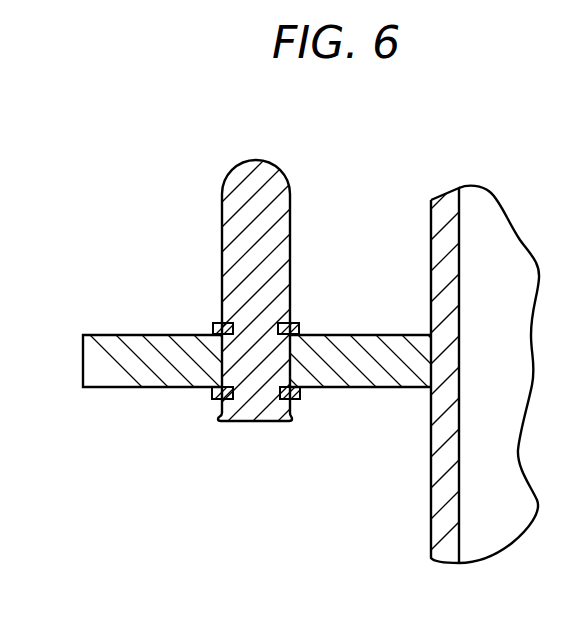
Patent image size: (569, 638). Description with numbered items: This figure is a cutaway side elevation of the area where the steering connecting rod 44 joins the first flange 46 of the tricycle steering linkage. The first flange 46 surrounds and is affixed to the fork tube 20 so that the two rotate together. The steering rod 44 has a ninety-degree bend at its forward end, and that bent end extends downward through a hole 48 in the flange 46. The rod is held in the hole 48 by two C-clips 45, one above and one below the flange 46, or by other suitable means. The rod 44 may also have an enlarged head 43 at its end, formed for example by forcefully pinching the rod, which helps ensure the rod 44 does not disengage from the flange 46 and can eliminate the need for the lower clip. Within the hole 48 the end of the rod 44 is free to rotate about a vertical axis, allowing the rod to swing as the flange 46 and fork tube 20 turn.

The fork tube 20 is at (431, 226).
The enlarged head 43 is at (256, 421).
The steering connecting rod 44 is at (257, 160).
The C-clips 45 is at (212, 326).
The first flange 46 is at (83, 360).
The hole 48 is at (291, 357).